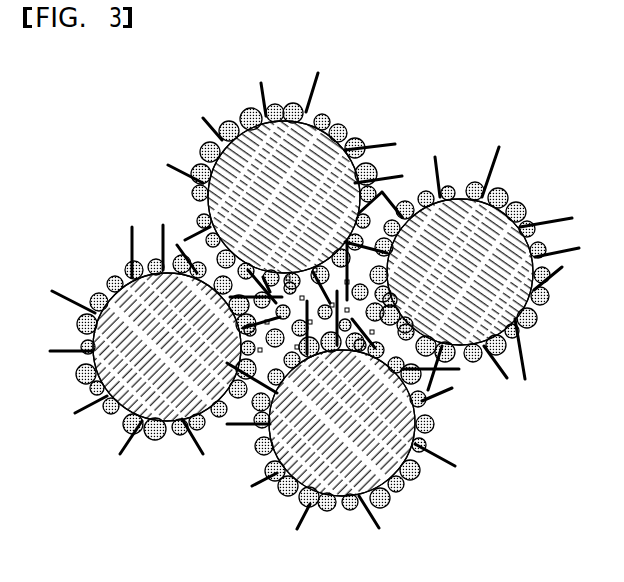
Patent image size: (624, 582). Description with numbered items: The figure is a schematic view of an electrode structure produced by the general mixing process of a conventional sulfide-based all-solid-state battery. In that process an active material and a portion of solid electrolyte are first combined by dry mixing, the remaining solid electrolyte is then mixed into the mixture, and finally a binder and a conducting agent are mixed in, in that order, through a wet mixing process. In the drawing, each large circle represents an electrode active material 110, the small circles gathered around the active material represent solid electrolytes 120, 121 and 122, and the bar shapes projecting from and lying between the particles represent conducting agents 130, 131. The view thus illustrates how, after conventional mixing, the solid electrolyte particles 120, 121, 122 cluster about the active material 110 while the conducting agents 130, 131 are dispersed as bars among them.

The electrode active material 110 is at (344, 128).
The solid electrolyte 120 is at (450, 174).
The solid electrolyte 121 is at (473, 172).
The coating particles 122 is at (231, 121).
The conducting agent 130 is at (128, 240).
The conducting agent 131 is at (437, 378).